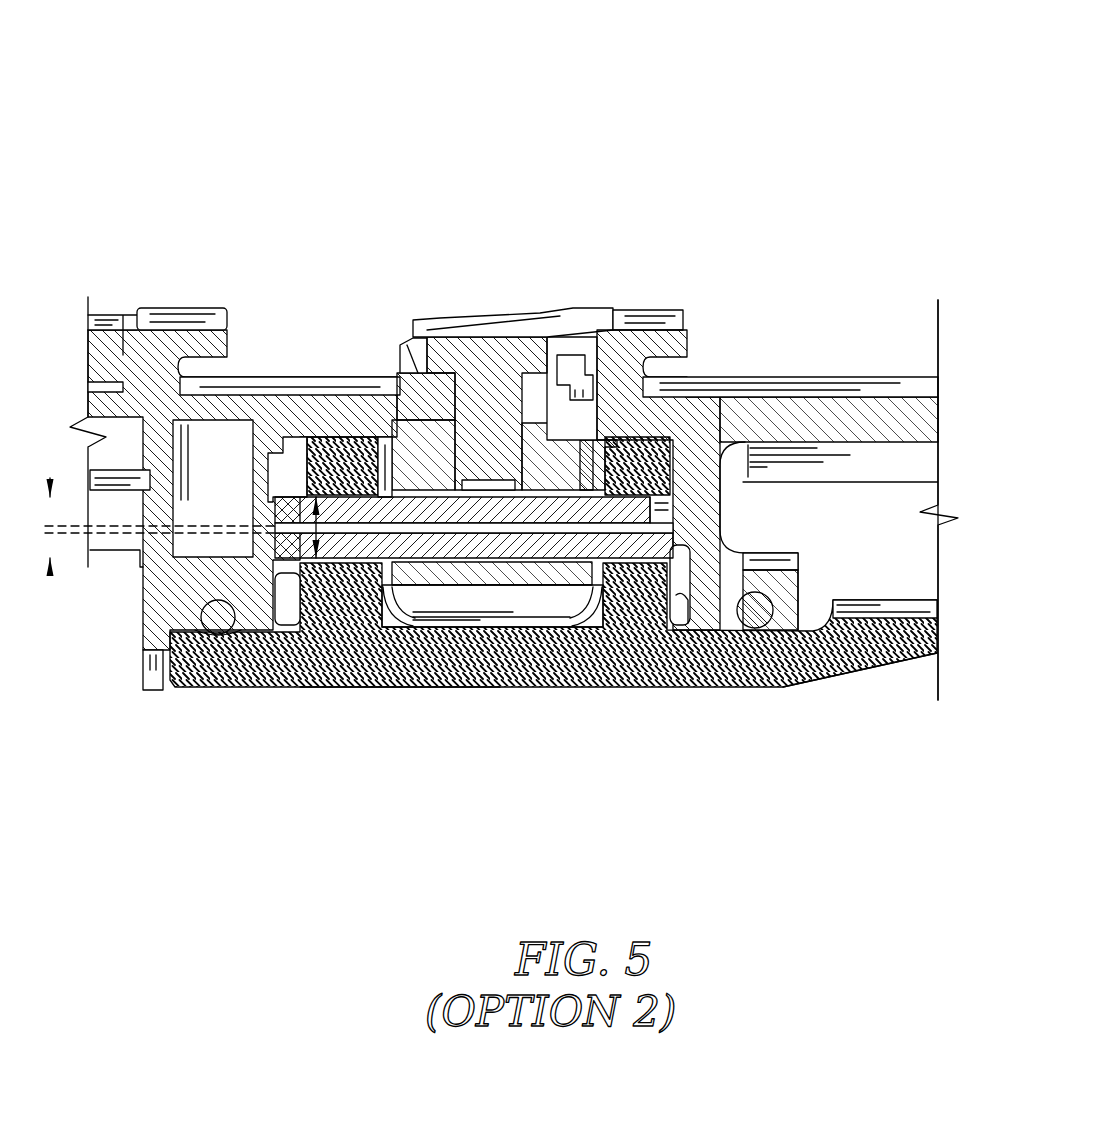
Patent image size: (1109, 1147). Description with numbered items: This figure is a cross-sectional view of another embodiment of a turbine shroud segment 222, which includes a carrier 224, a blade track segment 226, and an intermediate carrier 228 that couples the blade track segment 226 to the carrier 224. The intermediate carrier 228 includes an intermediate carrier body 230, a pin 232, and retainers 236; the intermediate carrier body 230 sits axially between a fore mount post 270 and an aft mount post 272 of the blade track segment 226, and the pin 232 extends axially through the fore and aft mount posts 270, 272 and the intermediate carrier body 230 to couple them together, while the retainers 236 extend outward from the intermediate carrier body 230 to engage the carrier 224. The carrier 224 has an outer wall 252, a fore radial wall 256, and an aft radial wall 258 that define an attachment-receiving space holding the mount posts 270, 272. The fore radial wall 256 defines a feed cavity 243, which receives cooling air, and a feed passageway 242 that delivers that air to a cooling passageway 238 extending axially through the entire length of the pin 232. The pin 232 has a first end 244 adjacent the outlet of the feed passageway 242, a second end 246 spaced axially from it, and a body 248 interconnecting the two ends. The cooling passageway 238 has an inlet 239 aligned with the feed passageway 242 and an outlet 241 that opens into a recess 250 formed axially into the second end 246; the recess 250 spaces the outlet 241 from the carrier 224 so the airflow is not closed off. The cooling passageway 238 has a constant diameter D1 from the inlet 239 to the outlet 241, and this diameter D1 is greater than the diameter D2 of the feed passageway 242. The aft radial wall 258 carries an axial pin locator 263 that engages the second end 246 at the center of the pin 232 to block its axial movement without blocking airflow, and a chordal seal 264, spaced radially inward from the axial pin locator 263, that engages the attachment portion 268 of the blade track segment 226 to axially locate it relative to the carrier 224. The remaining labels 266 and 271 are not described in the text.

The turbine shroud segment 222 is at (160, 105).
The carrier 224 is at (205, 266).
The blade track segment 226 is at (397, 810).
The intermediate carrier 228 is at (532, 210).
The intermediate carrier body 230 is at (577, 430).
The pin 232 is at (297, 480).
The retainer 236 is at (498, 307).
The cooling passageway 238 is at (360, 537).
The inlet 239 is at (245, 543).
The outlet 241 is at (663, 540).
The feed passageway 242 is at (265, 534).
The feed cavity 243 is at (245, 514).
The first end 244 is at (260, 525).
The second end 246 is at (727, 500).
The body 248 is at (316, 496).
The recess 250 is at (665, 522).
The outer wall 252 is at (312, 380).
The fore radial wall 256 is at (118, 434).
The aft radial wall 258 is at (724, 472).
The axial pin locator 263 is at (720, 470).
The chordal seal 264 is at (800, 539).
The housing bottom 266 is at (413, 697).
The attachment portion 268 is at (550, 768).
The fore mount post 270 is at (403, 600).
The bearing seat 271 is at (488, 620).
The aft mount post 272 is at (597, 575).
The diameter of the cooling passageway D1 is at (316, 562).
The diameter of the feed passageway D2 is at (50, 573).